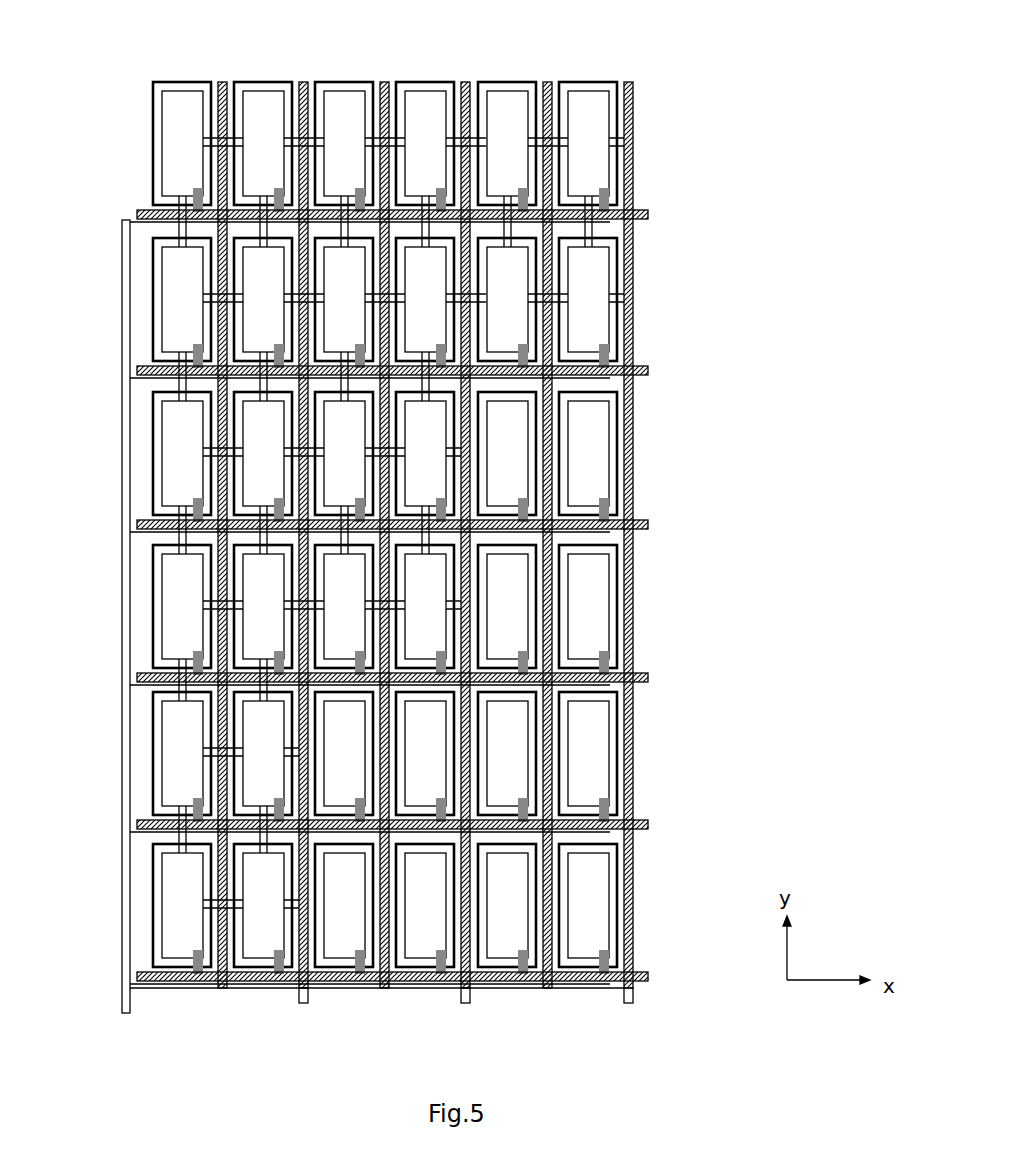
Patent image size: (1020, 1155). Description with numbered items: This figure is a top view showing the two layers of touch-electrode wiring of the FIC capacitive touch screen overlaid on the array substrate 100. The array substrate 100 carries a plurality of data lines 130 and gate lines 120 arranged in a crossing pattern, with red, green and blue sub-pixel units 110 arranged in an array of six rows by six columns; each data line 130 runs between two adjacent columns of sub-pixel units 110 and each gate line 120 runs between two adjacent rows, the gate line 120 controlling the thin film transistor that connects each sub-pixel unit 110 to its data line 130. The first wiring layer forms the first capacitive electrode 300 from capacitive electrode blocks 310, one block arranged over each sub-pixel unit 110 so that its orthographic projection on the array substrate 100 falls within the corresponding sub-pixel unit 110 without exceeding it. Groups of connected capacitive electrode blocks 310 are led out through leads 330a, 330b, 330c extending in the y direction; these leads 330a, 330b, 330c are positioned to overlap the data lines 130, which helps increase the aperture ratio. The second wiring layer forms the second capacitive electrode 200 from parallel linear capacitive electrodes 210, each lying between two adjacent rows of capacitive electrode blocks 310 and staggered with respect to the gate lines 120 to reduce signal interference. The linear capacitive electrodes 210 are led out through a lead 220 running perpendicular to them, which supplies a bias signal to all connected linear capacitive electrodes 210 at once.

The array substrate 100 is at (170, 83).
The first capacitive electrode 300 is at (267, 86).
The capacitive electrode block 310 is at (577, 91).
The sub-pixel unit 110 is at (610, 82).
The data line 130 is at (633, 107).
The gate line 120 is at (648, 682).
The second capacitive electrode 200 is at (121, 223).
The lead 220 is at (122, 913).
The linear capacitive electrode 210 is at (170, 990).
The lead 330a is at (628, 1005).
The lead 330b is at (467, 1005).
The lead 330c is at (305, 1005).